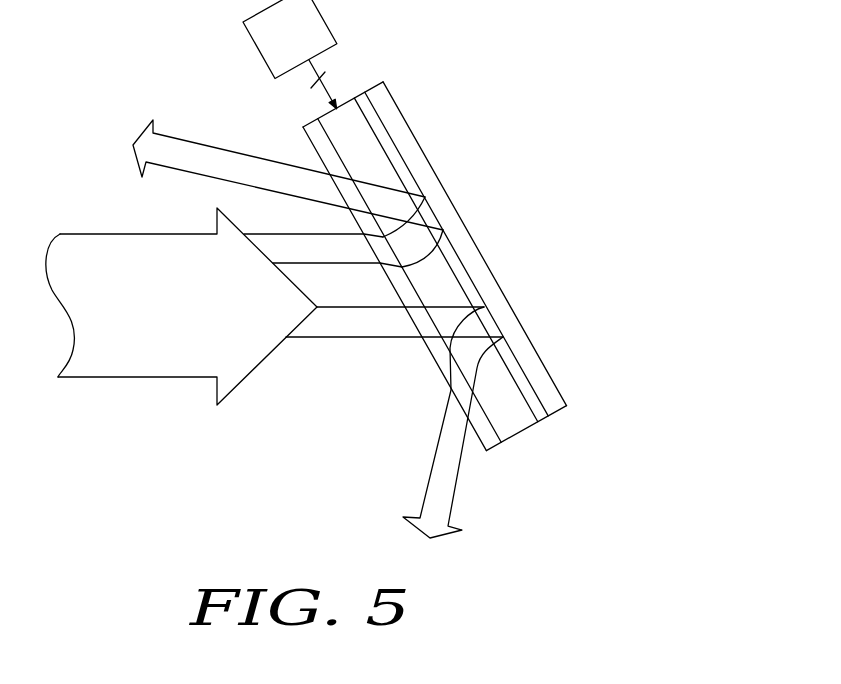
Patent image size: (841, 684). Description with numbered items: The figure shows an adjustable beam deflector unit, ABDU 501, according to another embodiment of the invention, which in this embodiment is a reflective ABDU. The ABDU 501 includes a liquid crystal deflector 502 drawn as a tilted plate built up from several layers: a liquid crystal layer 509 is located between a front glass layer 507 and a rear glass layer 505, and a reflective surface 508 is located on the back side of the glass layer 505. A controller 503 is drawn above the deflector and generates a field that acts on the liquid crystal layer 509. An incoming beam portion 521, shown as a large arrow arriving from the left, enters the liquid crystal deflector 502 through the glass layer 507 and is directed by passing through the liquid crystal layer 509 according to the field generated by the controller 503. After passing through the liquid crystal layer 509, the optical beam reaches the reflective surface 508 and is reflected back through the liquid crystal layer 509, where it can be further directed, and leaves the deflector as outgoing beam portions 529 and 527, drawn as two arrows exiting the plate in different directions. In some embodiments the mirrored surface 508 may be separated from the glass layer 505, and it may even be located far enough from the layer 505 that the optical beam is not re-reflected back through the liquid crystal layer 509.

The adjustable beam deflector unit 501 is at (460, 33).
The liquid crystal deflector 502 is at (562, 343).
The controller 503 is at (311, 43).
The glass layer 505 is at (548, 416).
The glass layer 507 is at (432, 348).
The reflective surface 508 is at (553, 390).
The liquid crystal layer 509 is at (513, 422).
The incoming beam portion 521 is at (178, 320).
The outgoing beam portion 527 is at (437, 472).
The outgoing beam portion 529 is at (243, 157).